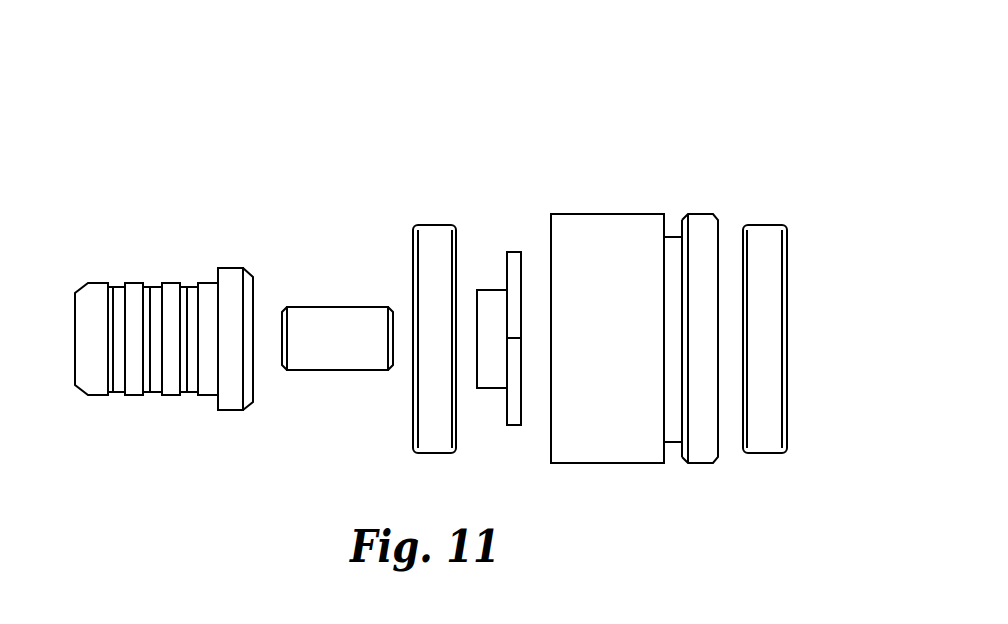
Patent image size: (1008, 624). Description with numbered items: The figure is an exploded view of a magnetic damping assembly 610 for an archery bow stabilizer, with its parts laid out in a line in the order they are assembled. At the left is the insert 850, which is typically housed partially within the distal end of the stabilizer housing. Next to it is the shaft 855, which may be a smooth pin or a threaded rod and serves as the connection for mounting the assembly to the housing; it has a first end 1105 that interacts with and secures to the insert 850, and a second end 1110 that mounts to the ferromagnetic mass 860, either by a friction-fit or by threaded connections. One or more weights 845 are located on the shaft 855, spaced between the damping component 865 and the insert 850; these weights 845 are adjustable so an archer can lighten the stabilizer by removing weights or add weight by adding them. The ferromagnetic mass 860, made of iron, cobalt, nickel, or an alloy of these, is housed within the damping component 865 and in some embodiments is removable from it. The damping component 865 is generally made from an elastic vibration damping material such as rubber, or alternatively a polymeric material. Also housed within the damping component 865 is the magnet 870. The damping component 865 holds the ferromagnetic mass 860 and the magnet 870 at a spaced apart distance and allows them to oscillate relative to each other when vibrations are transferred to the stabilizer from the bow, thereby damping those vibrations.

The magnetic damping assembly 610 is at (573, 108).
The insert 850 is at (94, 283).
The first end 1105 is at (289, 305).
The shaft 855 is at (325, 372).
The second end 1110 is at (385, 306).
The weights 845 is at (433, 225).
The ferromagnetic mass 860 is at (493, 290).
The damping component 865 is at (608, 464).
The magnet 870 is at (764, 224).